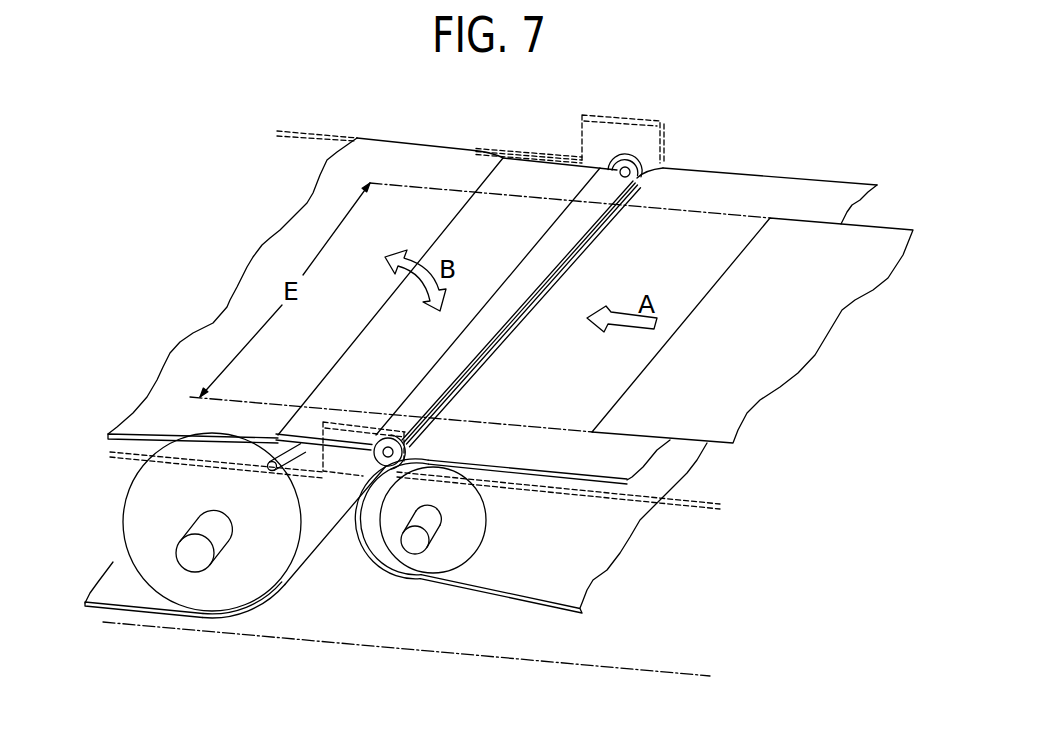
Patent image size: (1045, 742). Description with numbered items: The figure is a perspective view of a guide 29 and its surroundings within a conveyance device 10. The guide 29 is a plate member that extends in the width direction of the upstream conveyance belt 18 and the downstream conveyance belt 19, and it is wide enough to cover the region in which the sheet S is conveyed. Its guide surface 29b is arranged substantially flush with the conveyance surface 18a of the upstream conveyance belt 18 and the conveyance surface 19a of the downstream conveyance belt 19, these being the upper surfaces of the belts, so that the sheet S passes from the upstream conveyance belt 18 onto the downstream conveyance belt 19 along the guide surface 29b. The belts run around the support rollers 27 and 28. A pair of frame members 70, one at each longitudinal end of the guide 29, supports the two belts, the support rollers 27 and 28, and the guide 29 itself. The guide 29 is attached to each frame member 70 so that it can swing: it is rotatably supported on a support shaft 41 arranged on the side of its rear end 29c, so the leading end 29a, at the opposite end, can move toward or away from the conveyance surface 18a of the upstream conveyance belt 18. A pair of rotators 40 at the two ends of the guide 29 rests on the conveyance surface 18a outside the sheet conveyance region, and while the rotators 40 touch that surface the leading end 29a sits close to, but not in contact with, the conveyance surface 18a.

The conveyance device 10 is at (748, 107).
The upstream conveyance belt 18 is at (757, 172).
The conveyance surface of the upstream conveyance belt 18a is at (817, 193).
The downstream conveyance belt 19 is at (423, 142).
The conveyance surface of the downstream conveyance belt 19a is at (387, 157).
The support roller 27 is at (443, 553).
The support roller 28 is at (197, 587).
The guide 29 is at (553, 157).
The leading end of the guide 29a is at (592, 238).
The guide surface 29b is at (523, 177).
The rear end of the guide 29c is at (447, 225).
The rotator 40 is at (632, 160).
The support shaft 41 is at (292, 452).
The frame member 70 is at (642, 118).
The sheet S is at (793, 333).